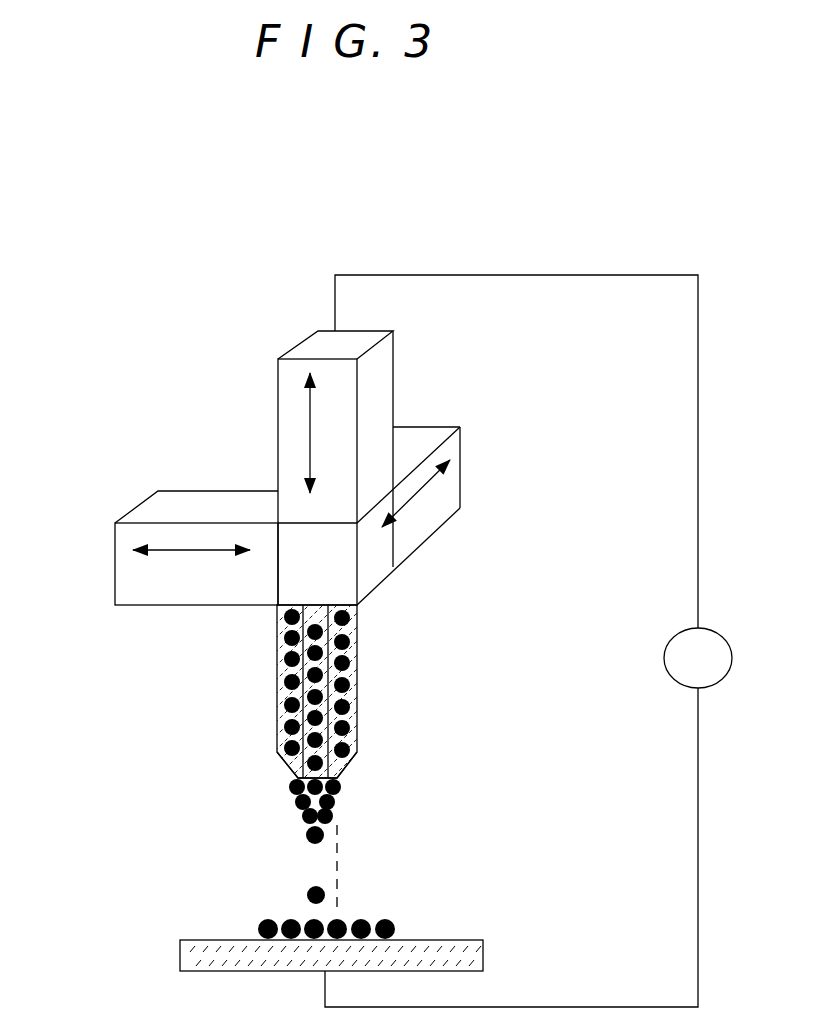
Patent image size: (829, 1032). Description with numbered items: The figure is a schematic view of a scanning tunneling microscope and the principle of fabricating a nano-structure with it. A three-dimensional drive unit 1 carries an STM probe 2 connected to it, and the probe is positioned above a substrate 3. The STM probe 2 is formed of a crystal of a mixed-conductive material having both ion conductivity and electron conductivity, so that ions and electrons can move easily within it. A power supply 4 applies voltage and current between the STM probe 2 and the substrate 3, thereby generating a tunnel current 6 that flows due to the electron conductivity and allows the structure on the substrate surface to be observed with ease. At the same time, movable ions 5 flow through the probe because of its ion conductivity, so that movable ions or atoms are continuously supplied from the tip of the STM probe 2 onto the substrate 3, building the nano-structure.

The three-dimensional drive unit 1 is at (135, 485).
The STM probe 2 is at (222, 688).
The substrate 3 is at (165, 945).
The power supply 4 is at (742, 647).
The movable ions 5 is at (282, 755).
The tunnel current 6 is at (360, 863).